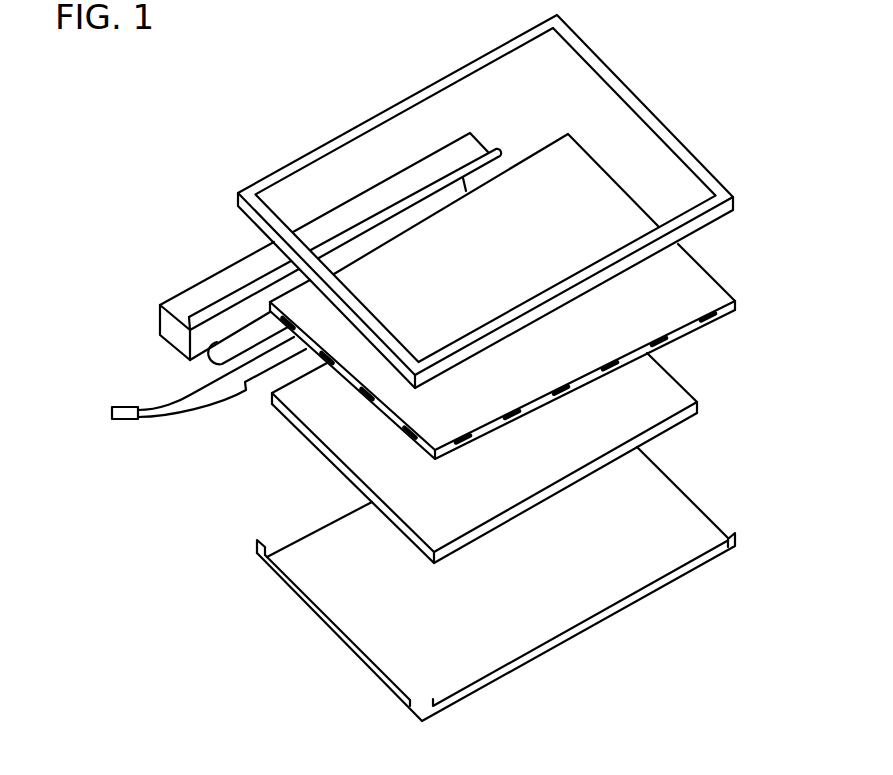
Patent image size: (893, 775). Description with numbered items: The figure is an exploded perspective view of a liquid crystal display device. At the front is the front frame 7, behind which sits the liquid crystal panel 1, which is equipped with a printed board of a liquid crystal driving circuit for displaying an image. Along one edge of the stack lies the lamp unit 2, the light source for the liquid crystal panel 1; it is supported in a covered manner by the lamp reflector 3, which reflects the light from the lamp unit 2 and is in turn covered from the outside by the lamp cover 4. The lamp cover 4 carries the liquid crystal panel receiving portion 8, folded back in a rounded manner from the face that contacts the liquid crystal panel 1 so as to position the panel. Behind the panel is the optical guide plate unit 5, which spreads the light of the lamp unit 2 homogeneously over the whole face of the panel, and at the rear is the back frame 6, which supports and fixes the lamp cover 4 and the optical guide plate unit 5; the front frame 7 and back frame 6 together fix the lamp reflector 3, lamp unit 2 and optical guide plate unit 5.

The liquid crystal panel 1 is at (720, 284).
The lamp unit 2 is at (247, 385).
The lamp reflector 3 is at (209, 356).
The lamp cover 4 is at (175, 297).
The optical guide plate unit 5 is at (697, 402).
The back frame 6 is at (736, 540).
The front frame 7 is at (717, 180).
The liquid crystal panel receiving portion 8 is at (220, 297).